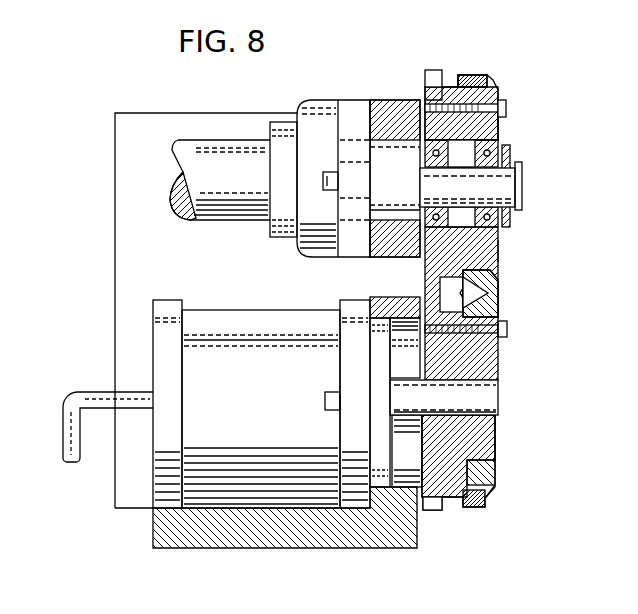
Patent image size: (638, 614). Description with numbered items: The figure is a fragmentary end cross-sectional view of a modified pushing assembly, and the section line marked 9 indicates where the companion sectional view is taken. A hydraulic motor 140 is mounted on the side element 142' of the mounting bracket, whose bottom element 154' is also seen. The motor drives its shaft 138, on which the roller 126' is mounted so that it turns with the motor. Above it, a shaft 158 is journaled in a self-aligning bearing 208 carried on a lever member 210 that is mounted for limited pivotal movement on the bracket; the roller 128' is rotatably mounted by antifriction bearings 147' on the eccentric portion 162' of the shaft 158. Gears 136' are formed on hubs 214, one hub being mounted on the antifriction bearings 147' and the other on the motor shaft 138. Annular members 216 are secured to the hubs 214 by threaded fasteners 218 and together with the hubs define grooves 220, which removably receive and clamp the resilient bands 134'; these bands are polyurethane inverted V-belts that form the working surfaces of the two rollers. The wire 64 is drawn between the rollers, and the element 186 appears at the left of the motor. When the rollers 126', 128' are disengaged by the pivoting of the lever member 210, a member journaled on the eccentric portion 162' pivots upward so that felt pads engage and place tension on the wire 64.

The self-aligning bearing 208 is at (306, 102).
The lever member 210 is at (388, 100).
The shaft 158 is at (241, 188).
The gears 136' is at (432, 300).
The resilient bands 134' is at (504, 287).
The threaded fasteners 218 is at (506, 100).
The roller 128' is at (523, 151).
The hubs 214 is at (498, 134).
The antifriction bearings 147' is at (541, 178).
The eccentric portion 162' is at (471, 186).
The grooves 220 is at (498, 250).
The annular members 216 is at (498, 280).
The wire 64 is at (482, 291).
The roller 126' is at (490, 368).
The shaft 138 is at (442, 408).
The side element 142' is at (380, 375).
The hydraulic motor 140 is at (258, 388).
The bottom element 154' is at (285, 539).
The lead conduit 186 is at (82, 388).
The section line 9- 9 is at (532, 28).